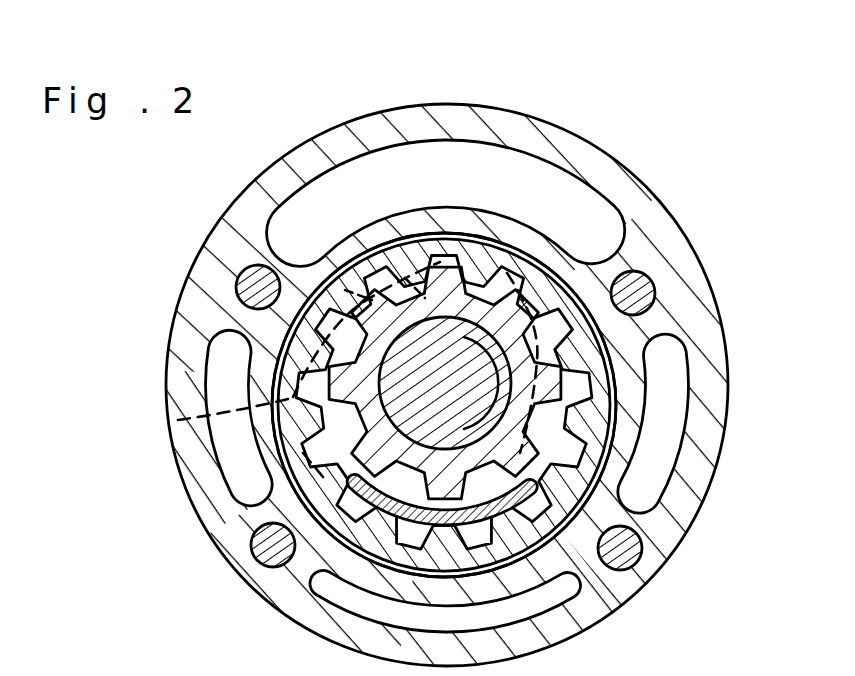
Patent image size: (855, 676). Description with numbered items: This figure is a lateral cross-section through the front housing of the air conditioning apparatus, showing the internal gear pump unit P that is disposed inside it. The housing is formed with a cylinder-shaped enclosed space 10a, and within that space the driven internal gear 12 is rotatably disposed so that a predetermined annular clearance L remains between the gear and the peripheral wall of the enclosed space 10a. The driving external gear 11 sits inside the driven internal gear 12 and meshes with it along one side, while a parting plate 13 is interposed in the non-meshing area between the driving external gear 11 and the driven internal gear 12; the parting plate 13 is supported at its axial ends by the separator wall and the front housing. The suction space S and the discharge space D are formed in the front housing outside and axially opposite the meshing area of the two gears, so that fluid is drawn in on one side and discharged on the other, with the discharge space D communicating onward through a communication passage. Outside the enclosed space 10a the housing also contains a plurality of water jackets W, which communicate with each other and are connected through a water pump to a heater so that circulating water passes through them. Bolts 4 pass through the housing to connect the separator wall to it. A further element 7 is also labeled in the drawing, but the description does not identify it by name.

The pump P is at (560, 108).
The annular clearance L is at (423, 297).
The suction port 7 is at (357, 300).
The enclosed space 10a is at (535, 272).
The water jackets W is at (616, 214).
The bolts 4 is at (237, 288).
The driving external gear 11 is at (520, 347).
The driven internal gear 12 is at (600, 395).
The discharge space D is at (178, 420).
The suction space S is at (610, 480).
The parting plate 13 is at (555, 481).